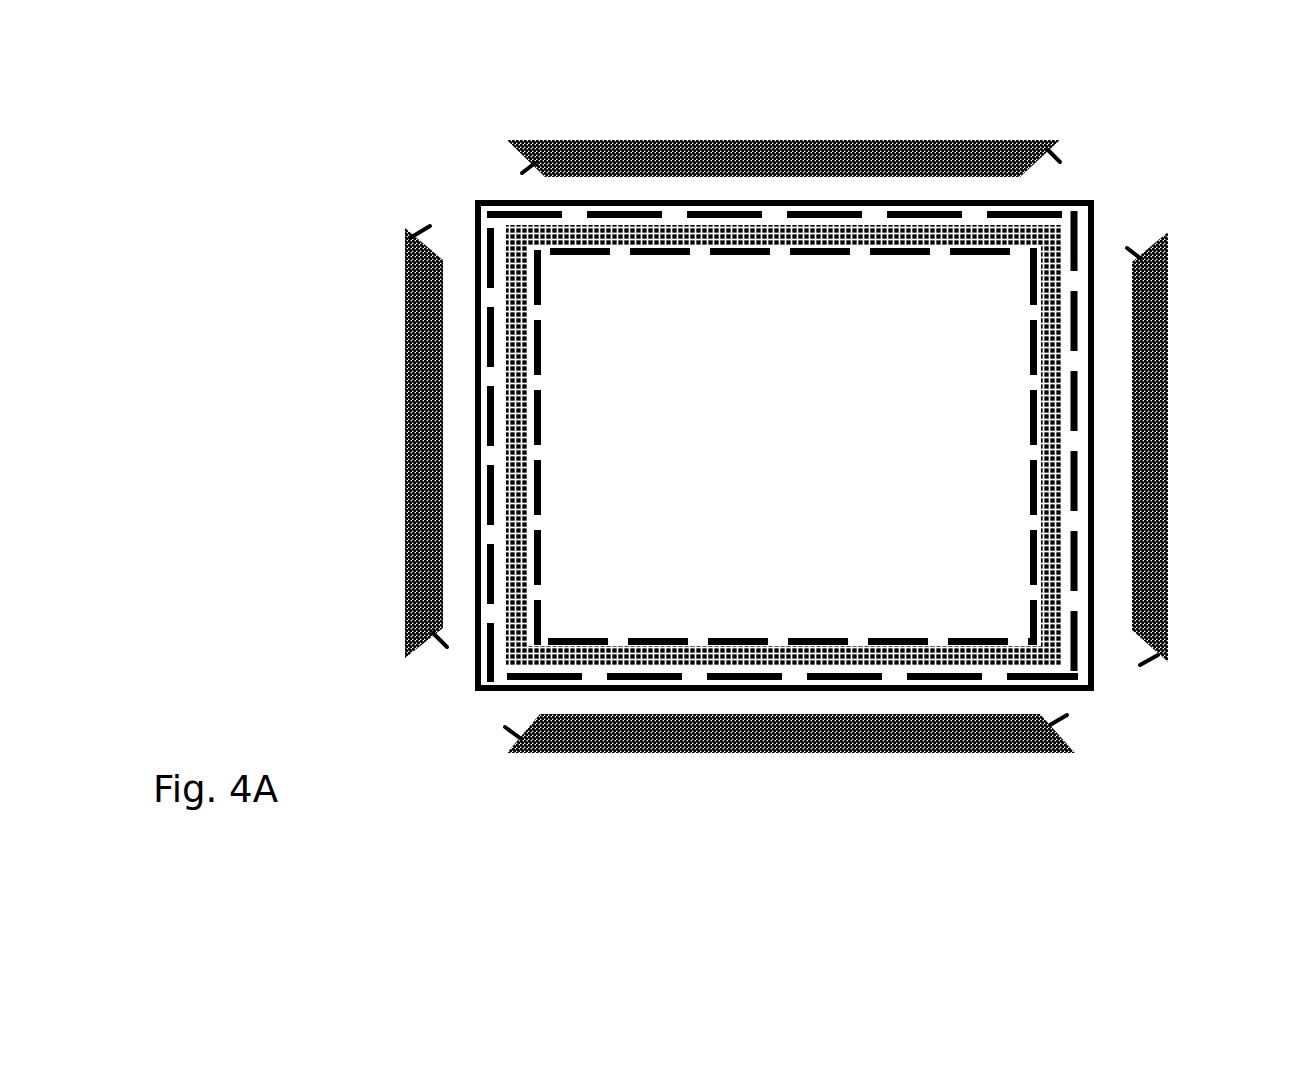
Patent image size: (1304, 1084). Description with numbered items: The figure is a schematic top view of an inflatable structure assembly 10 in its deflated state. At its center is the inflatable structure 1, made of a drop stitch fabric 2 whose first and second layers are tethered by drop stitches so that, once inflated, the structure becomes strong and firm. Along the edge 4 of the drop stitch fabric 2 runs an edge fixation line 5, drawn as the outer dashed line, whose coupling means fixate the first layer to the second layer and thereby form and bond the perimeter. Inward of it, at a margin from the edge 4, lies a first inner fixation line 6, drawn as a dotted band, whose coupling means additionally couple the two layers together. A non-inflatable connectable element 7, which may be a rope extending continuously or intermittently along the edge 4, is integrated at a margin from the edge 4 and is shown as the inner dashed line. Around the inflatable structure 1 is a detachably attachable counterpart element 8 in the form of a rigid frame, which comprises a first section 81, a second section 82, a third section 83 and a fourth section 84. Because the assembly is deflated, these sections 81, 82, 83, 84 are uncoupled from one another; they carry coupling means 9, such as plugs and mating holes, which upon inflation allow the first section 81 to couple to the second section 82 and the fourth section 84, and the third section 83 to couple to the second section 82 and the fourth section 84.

The inflatable structure 1 is at (1112, 698).
The drop stitch fabric 2 is at (572, 527).
The edge 4 is at (498, 198).
The edge fixation line 5 is at (572, 212).
The first inner fixation line 6 is at (698, 253).
The connectable element 7 is at (863, 235).
The counterpart element 8 is at (786, 436).
The first section 81 is at (387, 428).
The second section 82 is at (1010, 135).
The third section 83 is at (1177, 542).
The fourth section 84 is at (780, 765).
The coupling means 9 is at (1068, 153).
The inflatable structure assembly 10 is at (353, 155).